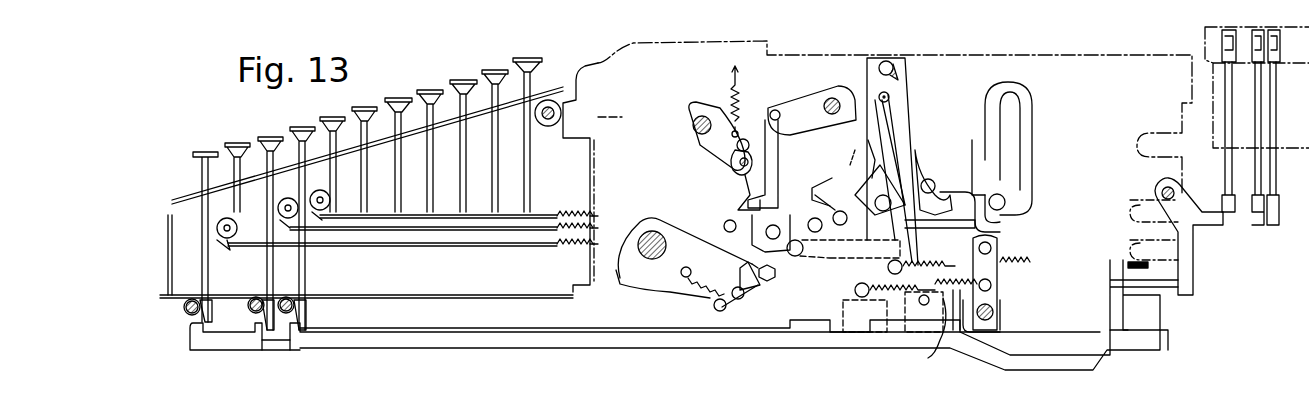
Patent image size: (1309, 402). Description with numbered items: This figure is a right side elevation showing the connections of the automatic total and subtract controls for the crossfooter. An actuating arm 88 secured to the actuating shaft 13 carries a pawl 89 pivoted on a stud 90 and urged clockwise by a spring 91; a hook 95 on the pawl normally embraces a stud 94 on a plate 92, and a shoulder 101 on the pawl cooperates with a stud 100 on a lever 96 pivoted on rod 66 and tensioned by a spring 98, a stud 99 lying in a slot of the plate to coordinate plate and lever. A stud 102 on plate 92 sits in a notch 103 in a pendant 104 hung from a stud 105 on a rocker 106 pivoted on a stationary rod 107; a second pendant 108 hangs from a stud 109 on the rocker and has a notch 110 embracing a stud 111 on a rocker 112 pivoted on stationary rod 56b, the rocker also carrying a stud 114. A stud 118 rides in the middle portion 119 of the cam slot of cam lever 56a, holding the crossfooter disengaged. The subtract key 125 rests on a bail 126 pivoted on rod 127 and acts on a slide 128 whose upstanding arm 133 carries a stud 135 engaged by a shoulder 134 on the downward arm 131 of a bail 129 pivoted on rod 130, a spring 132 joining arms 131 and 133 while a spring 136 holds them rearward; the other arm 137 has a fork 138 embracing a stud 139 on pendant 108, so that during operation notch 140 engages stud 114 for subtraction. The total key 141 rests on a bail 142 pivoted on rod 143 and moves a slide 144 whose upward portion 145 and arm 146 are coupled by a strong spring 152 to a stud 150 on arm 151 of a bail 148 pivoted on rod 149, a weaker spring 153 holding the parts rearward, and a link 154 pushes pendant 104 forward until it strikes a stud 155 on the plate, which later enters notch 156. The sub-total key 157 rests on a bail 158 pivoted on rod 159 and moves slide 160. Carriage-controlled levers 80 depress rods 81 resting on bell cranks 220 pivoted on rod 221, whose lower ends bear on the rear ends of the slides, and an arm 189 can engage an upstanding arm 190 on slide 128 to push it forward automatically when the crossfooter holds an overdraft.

The actuating shaft 13 is at (648, 228).
The cam lever 56a is at (975, 132).
The stationary rod 56b is at (872, 208).
The rod 66 is at (696, 118).
The lever 80 is at (1220, 48).
The rods 81 is at (1225, 170).
The actuating arm 88 is at (686, 280).
The pawl 89 is at (745, 295).
The stud 90 is at (724, 310).
The spring 91 is at (700, 290).
The plate 92 is at (744, 195).
The stud 94 is at (772, 289).
The hook 95 is at (778, 274).
The lever 96 is at (700, 142).
The spring 98 is at (732, 96).
The stud 99 is at (732, 168).
The stud 100 is at (745, 139).
The shoulder 101 is at (742, 265).
The stud 102 is at (808, 223).
The notch 103 is at (816, 194).
The pendant 104 is at (775, 164).
The stud 105 is at (773, 108).
The rocker 106 is at (852, 70).
The stationary rod 107 is at (820, 96).
The pendant 108 is at (870, 146).
The stud 109 is at (890, 97).
The notch 110 is at (940, 170).
The stud 111 is at (936, 185).
The rocker 112 is at (844, 155).
The stud 114 is at (840, 210).
The stud 118 is at (1006, 206).
The middle portion of cam slot 119 is at (1022, 146).
The crossfooter subtract key 125 is at (204, 152).
The bail 126 is at (212, 310).
The rod 127 is at (183, 315).
The slide 128 is at (222, 348).
The bail 129 is at (893, 58).
The rod 130 is at (882, 62).
The arm 131 is at (920, 231).
The spring 132 is at (912, 249).
The upstanding arm 133 is at (865, 316).
The shoulder 134 is at (855, 290).
The stud 135 is at (888, 268).
The spring 136 is at (998, 275).
The arm 137 is at (903, 125).
The fork 138 is at (880, 190).
The stud 139 is at (935, 209).
The notch 140 is at (830, 180).
The crossfooter total key 141 is at (304, 128).
The bail 142 is at (306, 312).
The rod 143 is at (286, 297).
The slide 144 is at (414, 348).
The upwardly extending portion 145 is at (924, 312).
The rearwardly extending arm 146 is at (992, 288).
The bail 148 is at (975, 332).
The rod 149 is at (994, 314).
The stud 150 is at (961, 310).
The arm 151 is at (1002, 312).
The strong spring 152 is at (935, 356).
The weaker spring 153 is at (1048, 274).
The link 154 is at (858, 256).
The stud 155 is at (724, 224).
The notch 156 is at (771, 231).
The crossfooter sub-total key 157 is at (270, 137).
The bail 158 is at (266, 298).
The rod 159 is at (257, 297).
The slide 160 is at (272, 348).
The inwardly projecting arm 189 is at (1130, 255).
The upstanding arm 190 is at (1110, 260).
The bell cranks 220 is at (1195, 235).
The rod 221 is at (1163, 188).